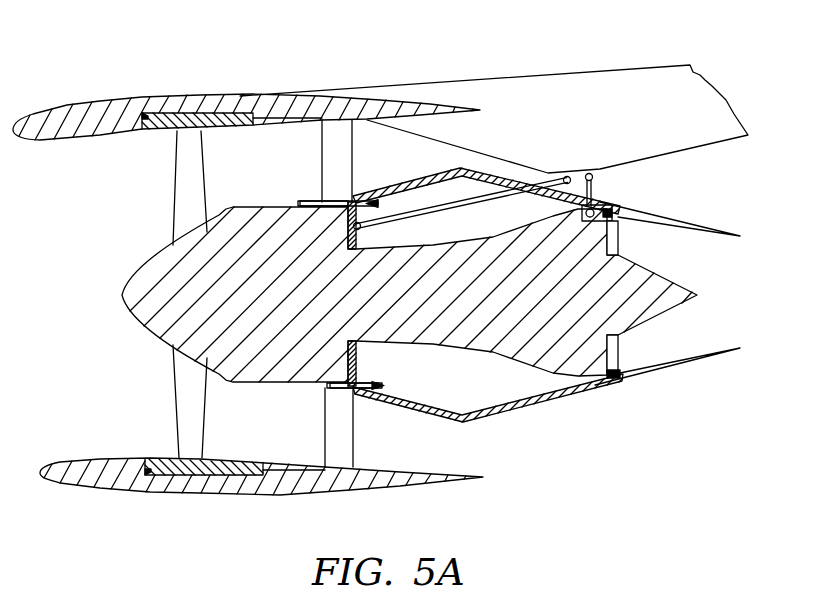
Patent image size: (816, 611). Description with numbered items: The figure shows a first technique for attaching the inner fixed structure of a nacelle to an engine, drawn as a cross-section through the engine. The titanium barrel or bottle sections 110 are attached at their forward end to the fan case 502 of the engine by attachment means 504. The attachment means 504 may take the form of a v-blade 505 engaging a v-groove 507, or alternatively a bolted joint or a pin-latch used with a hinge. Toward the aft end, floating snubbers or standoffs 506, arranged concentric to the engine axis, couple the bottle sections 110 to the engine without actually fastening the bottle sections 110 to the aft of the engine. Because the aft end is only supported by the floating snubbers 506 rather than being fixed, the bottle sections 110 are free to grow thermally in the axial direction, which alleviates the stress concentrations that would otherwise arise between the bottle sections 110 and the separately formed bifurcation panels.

The bottle section 110 is at (502, 172).
The fan case 502 is at (346, 234).
The attachment means 504 is at (358, 191).
The v-blade 505 is at (362, 383).
The floating snubber/standoff 506 is at (621, 199).
The v-groove 507 is at (355, 190).